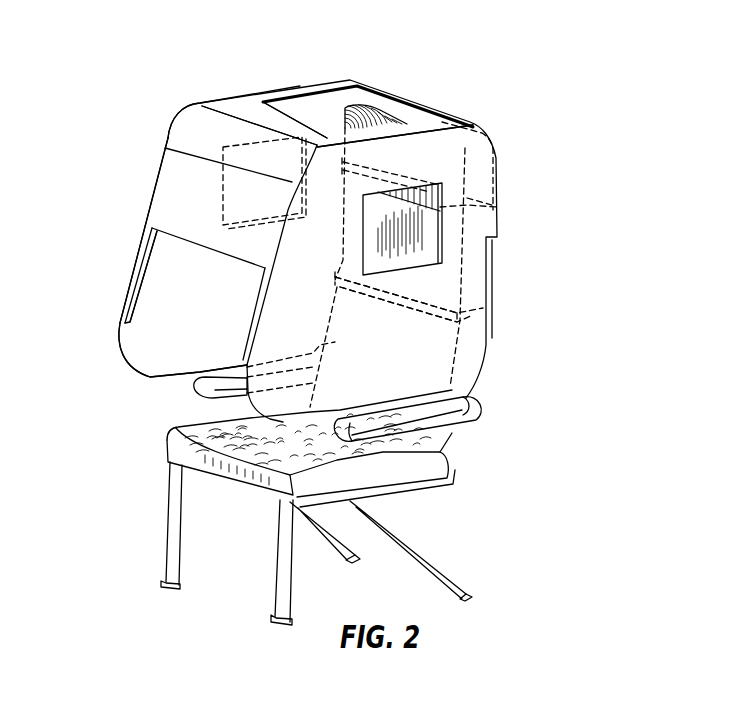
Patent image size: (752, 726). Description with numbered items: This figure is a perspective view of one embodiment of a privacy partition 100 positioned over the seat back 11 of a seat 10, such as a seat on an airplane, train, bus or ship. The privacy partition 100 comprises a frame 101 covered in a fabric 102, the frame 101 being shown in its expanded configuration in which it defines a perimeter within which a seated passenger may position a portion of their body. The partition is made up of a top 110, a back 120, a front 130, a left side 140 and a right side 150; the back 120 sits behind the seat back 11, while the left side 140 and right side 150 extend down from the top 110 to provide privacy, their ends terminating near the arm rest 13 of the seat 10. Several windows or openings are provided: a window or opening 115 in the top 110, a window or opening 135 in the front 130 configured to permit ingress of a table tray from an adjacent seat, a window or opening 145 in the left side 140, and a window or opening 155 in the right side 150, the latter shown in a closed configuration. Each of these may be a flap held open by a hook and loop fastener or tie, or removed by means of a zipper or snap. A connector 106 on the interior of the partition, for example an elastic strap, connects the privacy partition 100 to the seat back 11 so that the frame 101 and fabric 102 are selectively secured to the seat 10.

The seat 10 is at (175, 453).
The seat back 11 is at (380, 107).
The arm rest 13 is at (485, 413).
The privacy partition 100 is at (507, 90).
The frame 101 is at (211, 104).
The fabric 102 is at (130, 350).
The connector 106 is at (420, 198).
The top 110 is at (263, 113).
The window or opening 115 is at (322, 100).
The back 120 is at (508, 166).
The front 130 is at (110, 249).
The window or opening 135 is at (153, 278).
The left side 140 is at (428, 350).
The window or opening 145 is at (425, 242).
The right side 150 is at (160, 130).
The window or opening 155 is at (250, 190).